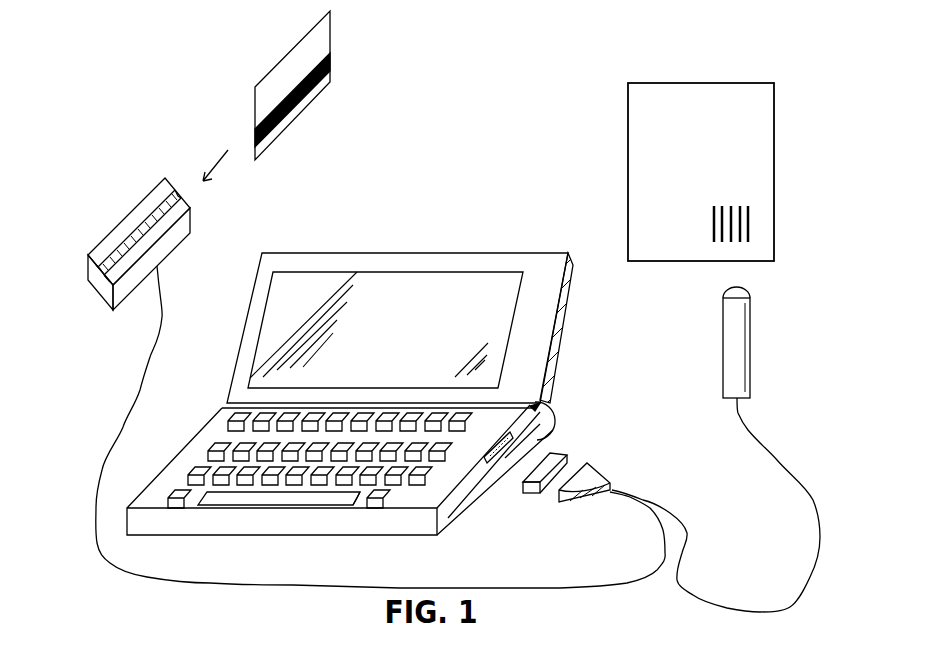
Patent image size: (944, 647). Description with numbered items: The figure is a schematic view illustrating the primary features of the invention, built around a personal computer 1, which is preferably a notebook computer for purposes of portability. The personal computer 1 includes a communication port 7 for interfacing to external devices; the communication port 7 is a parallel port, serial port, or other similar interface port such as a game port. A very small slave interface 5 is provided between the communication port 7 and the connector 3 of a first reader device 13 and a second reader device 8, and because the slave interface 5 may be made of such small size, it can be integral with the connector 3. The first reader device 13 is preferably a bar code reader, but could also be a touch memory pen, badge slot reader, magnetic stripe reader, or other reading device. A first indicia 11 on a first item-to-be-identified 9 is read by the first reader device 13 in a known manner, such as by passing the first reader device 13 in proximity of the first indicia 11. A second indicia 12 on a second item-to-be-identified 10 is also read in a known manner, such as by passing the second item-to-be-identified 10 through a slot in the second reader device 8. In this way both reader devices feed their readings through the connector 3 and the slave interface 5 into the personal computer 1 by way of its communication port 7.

The personal computer 1 is at (428, 302).
The connector 3 is at (568, 497).
The slave interface 5 is at (532, 488).
The communication port 7 is at (497, 468).
The second reader device 8 is at (172, 247).
The first item-to-be-identified 9 is at (693, 160).
The second item-to-be-identified 10 is at (326, 85).
The first indicia 11 is at (767, 211).
The second indicia 12 is at (310, 92).
The first reader device 13 is at (740, 367).